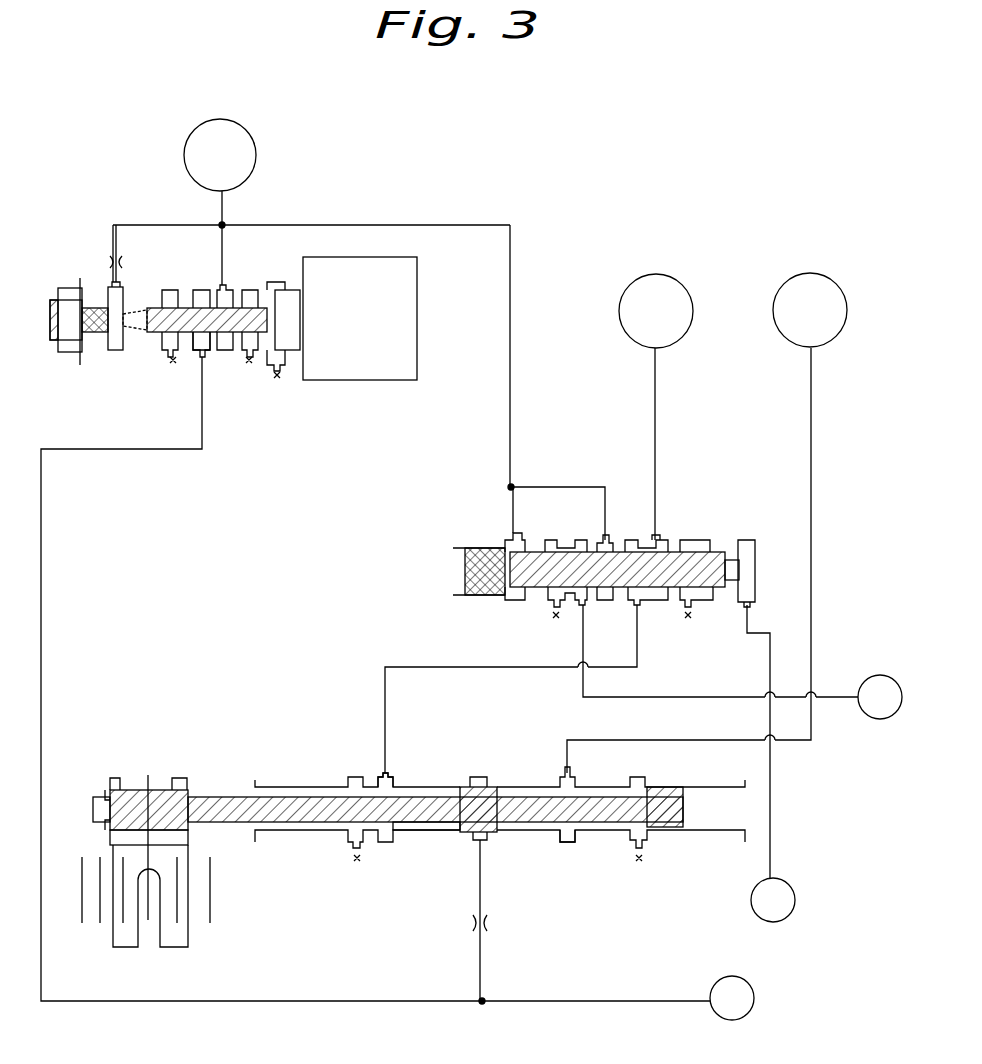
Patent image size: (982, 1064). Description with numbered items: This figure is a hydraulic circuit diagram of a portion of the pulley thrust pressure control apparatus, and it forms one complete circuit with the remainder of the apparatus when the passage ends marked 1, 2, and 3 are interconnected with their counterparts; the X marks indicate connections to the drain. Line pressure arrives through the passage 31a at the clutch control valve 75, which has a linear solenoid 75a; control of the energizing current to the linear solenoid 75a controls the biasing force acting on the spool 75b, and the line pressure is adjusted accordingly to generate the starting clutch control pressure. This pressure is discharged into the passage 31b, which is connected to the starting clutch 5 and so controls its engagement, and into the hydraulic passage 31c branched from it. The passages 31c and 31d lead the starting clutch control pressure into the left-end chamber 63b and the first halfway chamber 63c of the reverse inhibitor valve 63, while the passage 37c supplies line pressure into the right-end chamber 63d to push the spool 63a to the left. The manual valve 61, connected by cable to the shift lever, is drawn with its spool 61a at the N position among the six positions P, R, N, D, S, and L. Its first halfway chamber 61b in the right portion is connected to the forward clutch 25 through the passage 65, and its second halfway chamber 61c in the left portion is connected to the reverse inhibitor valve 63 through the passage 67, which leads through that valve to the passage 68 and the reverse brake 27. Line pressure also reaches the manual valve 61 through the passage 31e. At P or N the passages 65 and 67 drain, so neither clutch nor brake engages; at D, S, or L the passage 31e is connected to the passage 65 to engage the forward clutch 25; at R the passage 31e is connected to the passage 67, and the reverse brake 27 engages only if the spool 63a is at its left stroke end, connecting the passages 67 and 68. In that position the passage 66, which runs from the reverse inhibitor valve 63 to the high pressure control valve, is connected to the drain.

The starting clutch 5 is at (233, 172).
The reverse brake 27 is at (676, 328).
The forward clutch 25 is at (830, 327).
The passage end 3 is at (880, 697).
The passage end 2 is at (773, 900).
The passage end 1 is at (732, 998).
The hydraulic passage 31a is at (551, 1003).
The hydraulic passage 31b is at (228, 204).
The hydraulic passage 31c is at (510, 235).
The hydraulic passage 31d is at (557, 487).
The hydraulic passage 31e is at (481, 884).
The hydraulic passage 37c is at (772, 782).
The manual valve 61 is at (409, 842).
The spool 61a is at (422, 812).
The first halfway chamber 61b is at (567, 842).
The second halfway chamber 61c is at (392, 783).
The reverse inhibitor valve 63 is at (624, 544).
The spool 63a is at (537, 562).
The left-end chamber 63b is at (518, 595).
The first halfway chamber 63c is at (609, 542).
The right-end chamber 63d is at (748, 555).
The passage 65 is at (813, 423).
The passage 66 is at (667, 697).
The passage 67 is at (463, 672).
The passage 68 is at (657, 385).
The clutch control valve 75 is at (178, 348).
The linear solenoid 75a is at (388, 333).
The spool 75b is at (187, 325).